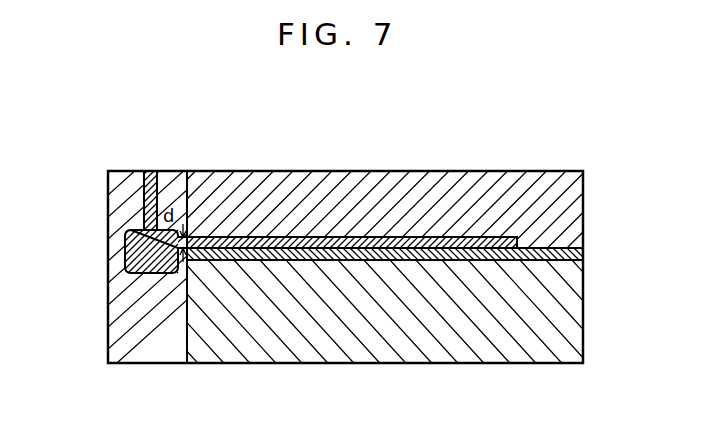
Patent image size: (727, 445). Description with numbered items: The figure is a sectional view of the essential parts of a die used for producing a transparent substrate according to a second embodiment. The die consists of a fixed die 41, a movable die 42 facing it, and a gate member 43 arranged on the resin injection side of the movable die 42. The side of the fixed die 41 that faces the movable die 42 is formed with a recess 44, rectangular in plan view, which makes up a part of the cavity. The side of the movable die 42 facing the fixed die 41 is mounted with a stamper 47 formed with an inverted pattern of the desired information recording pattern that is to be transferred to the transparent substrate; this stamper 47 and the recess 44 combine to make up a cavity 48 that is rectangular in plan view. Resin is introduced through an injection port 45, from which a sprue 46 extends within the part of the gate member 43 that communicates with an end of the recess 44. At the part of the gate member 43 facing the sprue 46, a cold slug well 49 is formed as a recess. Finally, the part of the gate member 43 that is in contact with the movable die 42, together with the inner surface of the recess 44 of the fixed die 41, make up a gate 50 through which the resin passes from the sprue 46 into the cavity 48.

The fixed die 41 is at (408, 182).
The movable die 42 is at (482, 333).
The gate member 43 is at (122, 328).
The recess 44 is at (283, 237).
The injection port 45 is at (148, 171).
The sprue 46 is at (148, 210).
The stamper 47 is at (543, 248).
The cavity 48 is at (340, 248).
The cold slug well 49 is at (135, 259).
The gate 50 is at (206, 187).